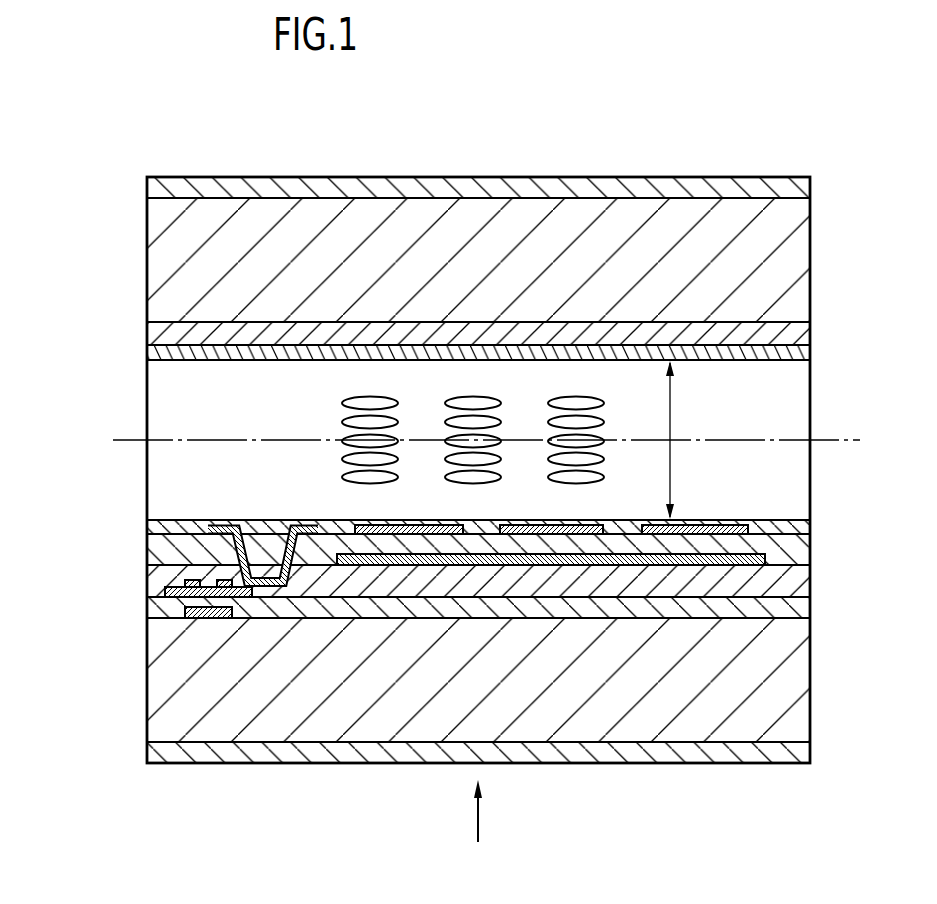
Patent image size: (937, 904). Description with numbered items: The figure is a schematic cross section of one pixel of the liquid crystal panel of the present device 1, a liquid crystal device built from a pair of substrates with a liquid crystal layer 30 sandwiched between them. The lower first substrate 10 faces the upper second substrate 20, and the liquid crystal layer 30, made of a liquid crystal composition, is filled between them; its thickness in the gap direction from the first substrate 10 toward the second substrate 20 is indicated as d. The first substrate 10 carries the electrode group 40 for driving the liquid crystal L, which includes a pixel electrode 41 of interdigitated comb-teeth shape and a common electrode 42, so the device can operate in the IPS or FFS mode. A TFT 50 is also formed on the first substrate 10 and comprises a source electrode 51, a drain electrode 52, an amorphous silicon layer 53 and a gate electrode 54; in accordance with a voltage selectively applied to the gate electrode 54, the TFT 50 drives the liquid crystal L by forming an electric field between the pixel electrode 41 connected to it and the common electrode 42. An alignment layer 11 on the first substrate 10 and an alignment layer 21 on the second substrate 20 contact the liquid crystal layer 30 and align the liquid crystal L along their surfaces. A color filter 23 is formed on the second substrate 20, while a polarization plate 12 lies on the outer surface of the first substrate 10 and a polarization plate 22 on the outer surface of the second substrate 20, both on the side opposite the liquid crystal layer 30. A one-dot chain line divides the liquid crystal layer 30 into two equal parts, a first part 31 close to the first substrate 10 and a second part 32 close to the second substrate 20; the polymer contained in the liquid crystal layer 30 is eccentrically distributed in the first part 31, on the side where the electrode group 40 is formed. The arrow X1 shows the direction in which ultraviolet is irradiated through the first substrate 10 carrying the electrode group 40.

The liquid crystal device 1 is at (472, 116).
The first substrate 10 is at (796, 683).
The alignment layer 11 is at (160, 530).
The polarization plate 12 is at (158, 753).
The second substrate 20 is at (796, 262).
The alignment layer 21 is at (158, 353).
The polarization plate 22 is at (158, 190).
The color filter 23 is at (158, 333).
The liquid crystal layer 30 is at (83, 393).
The first part 31 is at (135, 519).
The second part 32 is at (135, 361).
The electrode group 40 is at (873, 498).
The pixel electrode 41 is at (735, 524).
The common electrode 42 is at (763, 554).
The TFT 50 is at (78, 545).
The source electrode 51 is at (212, 588).
The drain electrode 52 is at (224, 575).
The amorphous silicon layer 53 is at (206, 599).
The gate electrode 54 is at (212, 614).
The liquid crystal L is at (362, 401).
The thickness of the liquid crystal layer d is at (678, 440).
The arrow X1 is at (481, 828).